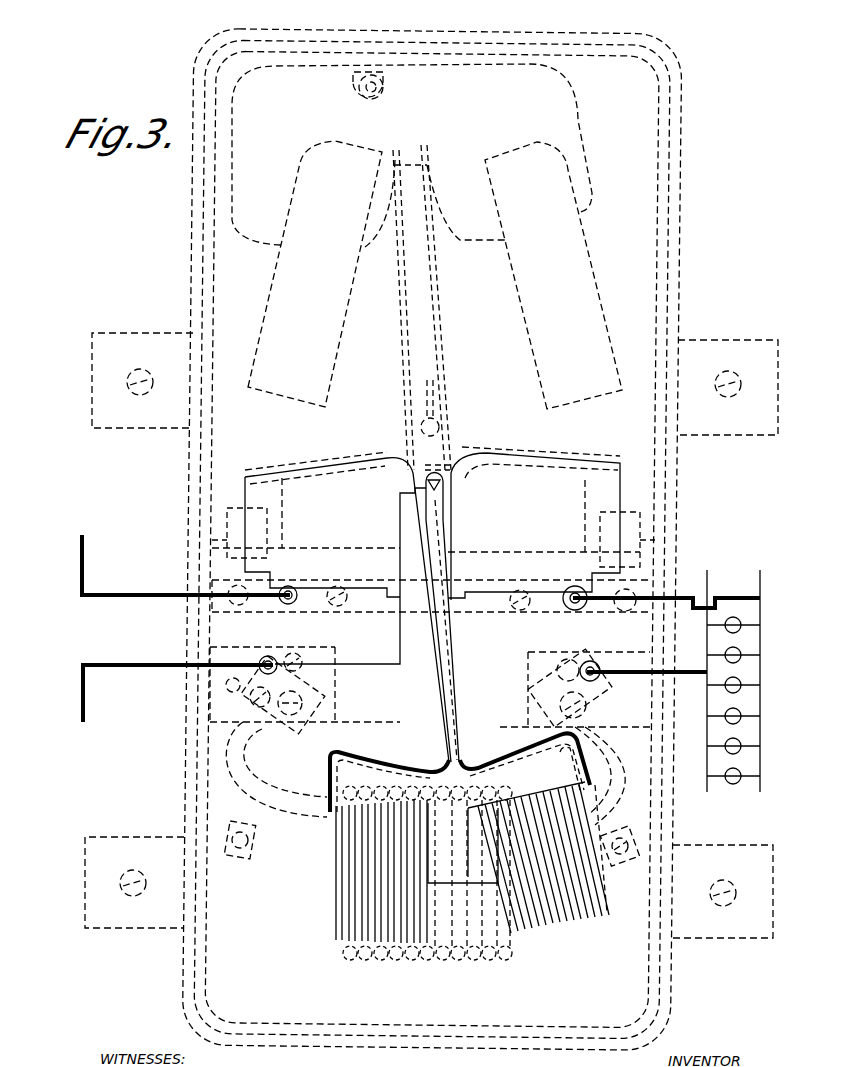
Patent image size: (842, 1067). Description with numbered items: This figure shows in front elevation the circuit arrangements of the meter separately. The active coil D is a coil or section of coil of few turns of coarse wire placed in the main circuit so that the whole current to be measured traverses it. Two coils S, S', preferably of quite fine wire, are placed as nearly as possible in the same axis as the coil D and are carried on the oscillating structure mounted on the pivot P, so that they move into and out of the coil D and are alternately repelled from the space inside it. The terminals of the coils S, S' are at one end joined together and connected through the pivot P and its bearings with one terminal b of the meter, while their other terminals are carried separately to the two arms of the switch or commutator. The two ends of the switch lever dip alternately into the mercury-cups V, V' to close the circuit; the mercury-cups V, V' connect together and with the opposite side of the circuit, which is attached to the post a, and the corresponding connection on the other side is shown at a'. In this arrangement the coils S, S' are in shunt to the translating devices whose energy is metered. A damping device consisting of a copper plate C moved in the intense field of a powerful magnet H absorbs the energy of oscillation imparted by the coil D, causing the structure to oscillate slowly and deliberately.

The copper plate C is at (412, 155).
The permanent magnet H is at (435, 275).
The pivot P is at (460, 478).
The mercury-cup V is at (212, 533).
The mercury-cup V' is at (654, 539).
The post a is at (214, 571).
The rod a' is at (635, 598).
The terminal of the meter b is at (349, 664).
The coil S is at (400, 875).
The coil S' is at (538, 879).
The coil D is at (425, 966).